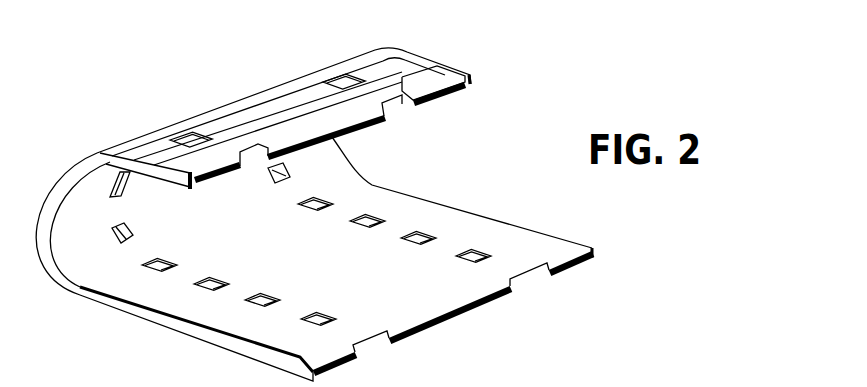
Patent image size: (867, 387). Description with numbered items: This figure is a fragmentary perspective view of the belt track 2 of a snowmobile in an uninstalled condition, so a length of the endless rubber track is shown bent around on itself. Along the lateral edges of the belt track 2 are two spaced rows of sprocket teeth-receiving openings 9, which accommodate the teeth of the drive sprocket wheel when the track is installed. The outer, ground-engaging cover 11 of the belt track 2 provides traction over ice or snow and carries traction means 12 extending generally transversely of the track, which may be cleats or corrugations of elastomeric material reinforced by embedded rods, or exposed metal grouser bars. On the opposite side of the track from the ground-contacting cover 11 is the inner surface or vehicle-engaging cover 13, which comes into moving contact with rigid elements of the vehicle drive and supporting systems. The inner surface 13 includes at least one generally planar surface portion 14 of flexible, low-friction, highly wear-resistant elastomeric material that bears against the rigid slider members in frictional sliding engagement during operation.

The belt track 2 is at (461, 64).
The sprocket teeth-receiving openings 9 is at (342, 83).
The ground-engaging cover 11 is at (423, 323).
The traction means 12 is at (238, 137).
The inner surface 13 is at (457, 213).
The surface portion 14 is at (485, 232).